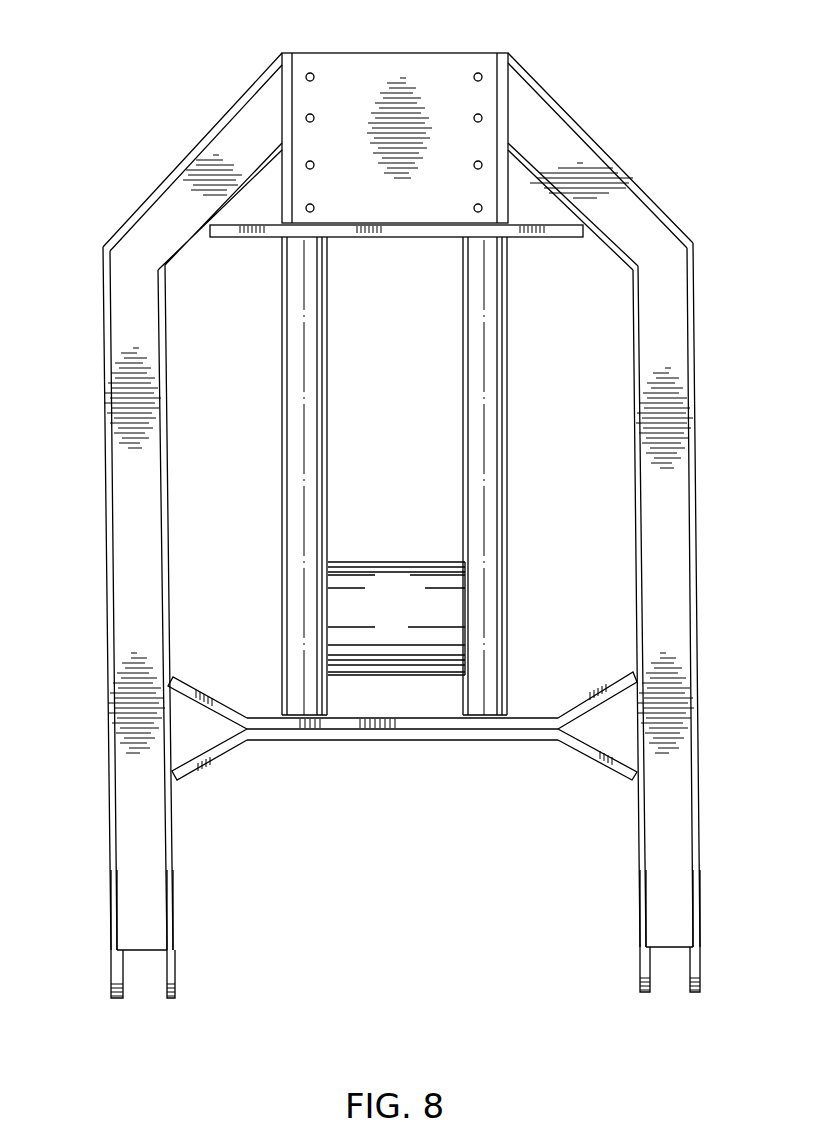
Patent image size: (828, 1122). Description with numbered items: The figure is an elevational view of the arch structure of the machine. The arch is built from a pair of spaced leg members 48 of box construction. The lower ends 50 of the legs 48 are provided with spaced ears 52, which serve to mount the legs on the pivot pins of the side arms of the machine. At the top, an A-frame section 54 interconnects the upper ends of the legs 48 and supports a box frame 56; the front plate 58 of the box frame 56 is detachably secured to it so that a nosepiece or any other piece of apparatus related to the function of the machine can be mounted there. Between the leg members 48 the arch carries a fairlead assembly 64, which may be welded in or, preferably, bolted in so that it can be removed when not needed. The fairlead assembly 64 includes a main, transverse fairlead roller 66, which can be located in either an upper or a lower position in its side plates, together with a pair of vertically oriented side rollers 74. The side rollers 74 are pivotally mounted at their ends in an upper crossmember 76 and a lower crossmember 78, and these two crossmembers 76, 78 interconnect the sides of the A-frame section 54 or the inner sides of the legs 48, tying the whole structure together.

The leg member 48 is at (148, 514).
The lower end 50 is at (178, 898).
The ear 52 is at (175, 975).
The A-frame section 54 is at (580, 130).
The box frame 56 is at (442, 60).
The front plate 58 is at (347, 72).
The fairlead assembly 64 is at (522, 397).
The fairlead roller 66 is at (381, 583).
The side roller 74 is at (322, 385).
The upper crossmember 76 is at (425, 240).
The lower crossmember 78 is at (538, 722).